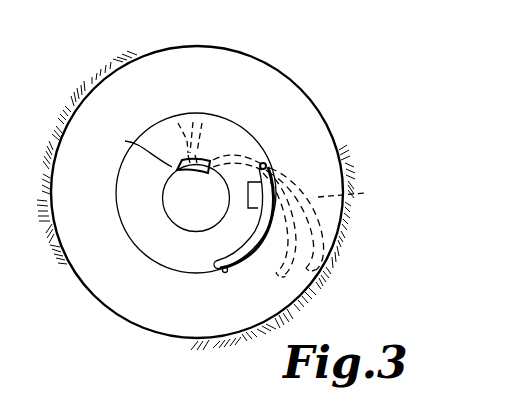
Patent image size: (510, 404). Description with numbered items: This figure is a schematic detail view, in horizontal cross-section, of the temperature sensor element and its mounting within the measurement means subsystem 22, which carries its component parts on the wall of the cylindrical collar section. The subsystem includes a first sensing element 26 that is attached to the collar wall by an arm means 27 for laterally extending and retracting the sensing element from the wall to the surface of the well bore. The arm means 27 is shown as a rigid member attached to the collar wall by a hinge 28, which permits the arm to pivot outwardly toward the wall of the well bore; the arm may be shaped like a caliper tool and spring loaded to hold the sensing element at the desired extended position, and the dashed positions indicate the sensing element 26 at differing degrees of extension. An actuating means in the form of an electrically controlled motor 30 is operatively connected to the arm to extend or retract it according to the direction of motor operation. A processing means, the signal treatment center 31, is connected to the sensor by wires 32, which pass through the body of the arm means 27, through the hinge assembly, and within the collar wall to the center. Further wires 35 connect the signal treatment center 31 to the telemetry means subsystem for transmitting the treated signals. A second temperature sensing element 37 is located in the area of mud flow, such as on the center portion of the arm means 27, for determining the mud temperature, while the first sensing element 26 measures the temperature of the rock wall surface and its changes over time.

The measurement means subsystem 22 is at (326, 108).
The first sensing element 26 is at (227, 273).
The arm means 27 is at (310, 277).
The hinge 28 is at (267, 163).
The electrically controlled motor 30 is at (247, 198).
The signal treatment center 31 is at (136, 149).
The wires 32 is at (240, 156).
The wires 35 is at (177, 122).
The second temperature sensing element 37 is at (354, 193).